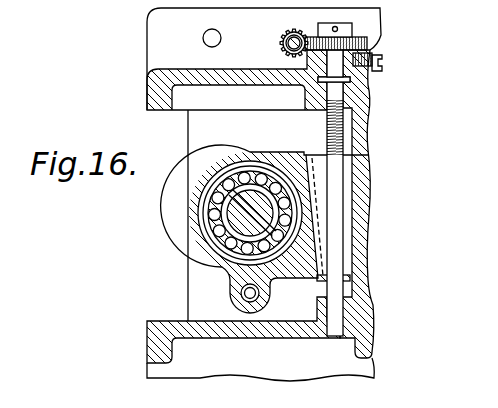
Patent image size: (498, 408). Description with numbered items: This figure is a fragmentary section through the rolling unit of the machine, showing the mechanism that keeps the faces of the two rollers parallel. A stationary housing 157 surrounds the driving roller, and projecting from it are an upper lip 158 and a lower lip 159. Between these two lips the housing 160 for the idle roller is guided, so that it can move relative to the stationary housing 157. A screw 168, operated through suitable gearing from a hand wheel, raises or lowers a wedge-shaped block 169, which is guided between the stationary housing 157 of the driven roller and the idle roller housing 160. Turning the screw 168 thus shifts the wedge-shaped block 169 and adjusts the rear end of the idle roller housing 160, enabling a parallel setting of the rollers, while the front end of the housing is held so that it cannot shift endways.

The stationary housing 157 is at (365, 118).
The lip 158 is at (182, 97).
The lip 159 is at (172, 341).
The housing for the idle roller 160 is at (212, 254).
The screw 168 is at (346, 141).
The wedge-shaped block 169 is at (347, 226).